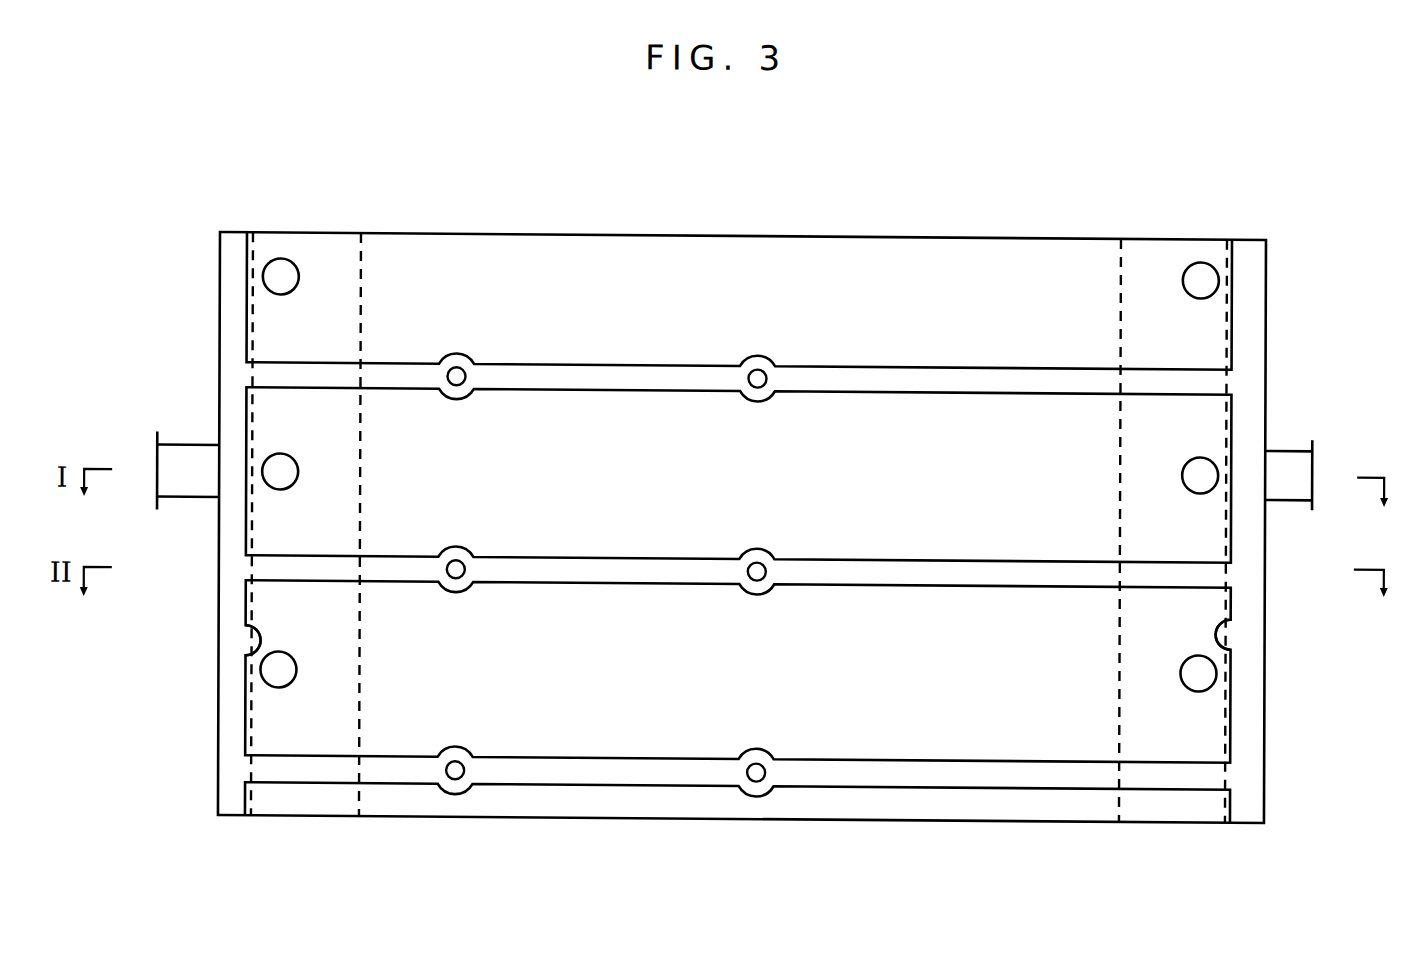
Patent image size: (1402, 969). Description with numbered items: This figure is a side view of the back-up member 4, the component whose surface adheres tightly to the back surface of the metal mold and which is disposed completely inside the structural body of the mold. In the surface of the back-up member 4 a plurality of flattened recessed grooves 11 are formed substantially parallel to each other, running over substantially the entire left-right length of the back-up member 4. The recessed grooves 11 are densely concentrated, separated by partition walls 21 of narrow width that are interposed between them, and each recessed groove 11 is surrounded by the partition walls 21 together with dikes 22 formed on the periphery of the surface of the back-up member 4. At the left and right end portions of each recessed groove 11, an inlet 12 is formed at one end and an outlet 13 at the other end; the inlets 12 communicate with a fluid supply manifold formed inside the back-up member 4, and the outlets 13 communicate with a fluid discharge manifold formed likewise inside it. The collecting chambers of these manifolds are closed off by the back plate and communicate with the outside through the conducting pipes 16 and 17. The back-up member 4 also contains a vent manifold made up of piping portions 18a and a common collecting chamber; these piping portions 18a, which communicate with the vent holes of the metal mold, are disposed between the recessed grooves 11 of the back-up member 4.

The back-up member 4 is at (1268, 311).
The recessed grooves 11 is at (624, 420).
The inlet 12 is at (1201, 255).
The outlet 13 is at (282, 258).
The conducting pipe 16 is at (1291, 450).
The conducting pipe 17 is at (182, 453).
The piping portions 18a is at (457, 365).
The partition walls 21 is at (1022, 571).
The dikes 22 is at (248, 651).